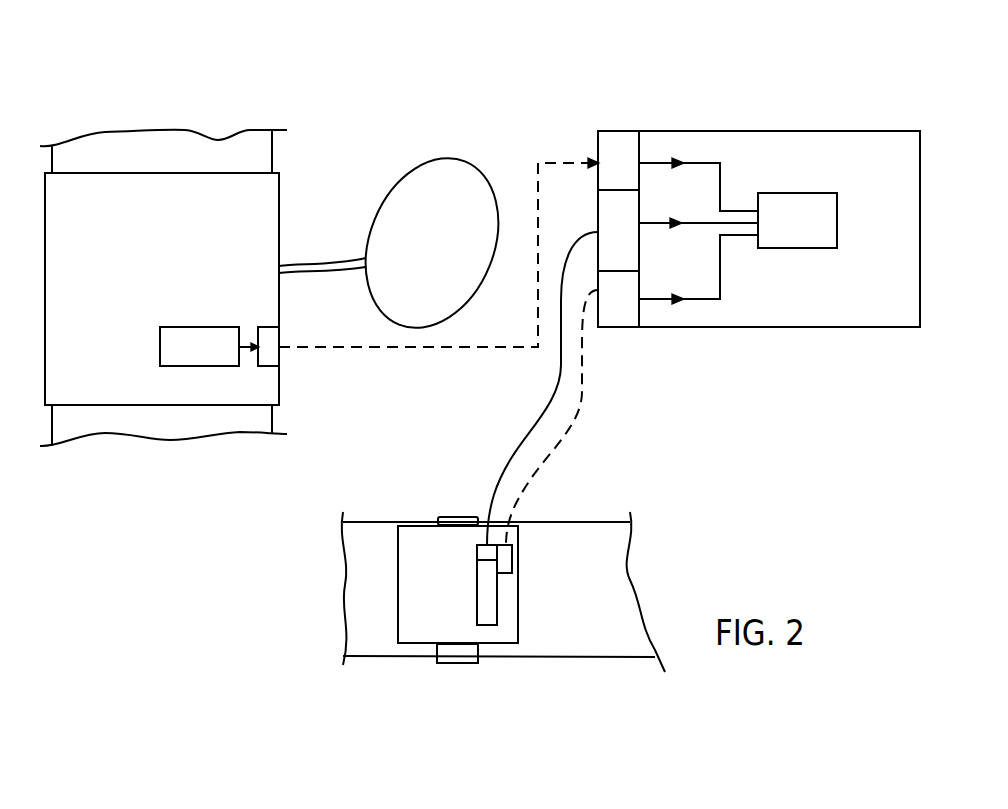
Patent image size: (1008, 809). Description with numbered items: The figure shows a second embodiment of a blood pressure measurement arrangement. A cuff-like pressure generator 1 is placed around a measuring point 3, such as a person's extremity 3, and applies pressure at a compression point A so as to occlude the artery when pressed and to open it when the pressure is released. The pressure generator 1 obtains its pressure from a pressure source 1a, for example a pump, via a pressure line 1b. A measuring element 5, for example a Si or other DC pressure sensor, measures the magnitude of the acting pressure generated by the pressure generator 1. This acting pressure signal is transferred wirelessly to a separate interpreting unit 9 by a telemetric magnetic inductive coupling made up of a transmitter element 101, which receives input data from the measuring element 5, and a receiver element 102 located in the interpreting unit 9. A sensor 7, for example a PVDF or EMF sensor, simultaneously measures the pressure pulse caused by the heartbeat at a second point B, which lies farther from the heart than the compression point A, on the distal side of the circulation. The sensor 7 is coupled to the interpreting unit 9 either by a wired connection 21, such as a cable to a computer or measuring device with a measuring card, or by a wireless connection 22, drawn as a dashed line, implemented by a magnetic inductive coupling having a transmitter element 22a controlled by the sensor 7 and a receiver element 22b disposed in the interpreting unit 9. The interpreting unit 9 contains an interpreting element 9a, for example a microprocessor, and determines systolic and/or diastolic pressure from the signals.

The pressure generator 1 is at (270, 216).
The pressure source 1a is at (466, 291).
The pressure line 1b is at (329, 278).
The measuring point 3 is at (220, 148).
The measuring element 5 is at (200, 333).
The sensor 7 is at (483, 585).
The interpreting unit 9 is at (806, 140).
The interpreting element 9a is at (830, 225).
The wired connection 21 is at (549, 400).
The wireless connection 22 is at (577, 393).
The transmitter element 22a is at (508, 560).
The receiver element 22b is at (630, 287).
The transmitter element 101 is at (268, 333).
The receiver element 102 is at (604, 150).
The compression point A is at (273, 150).
The second point B is at (568, 530).